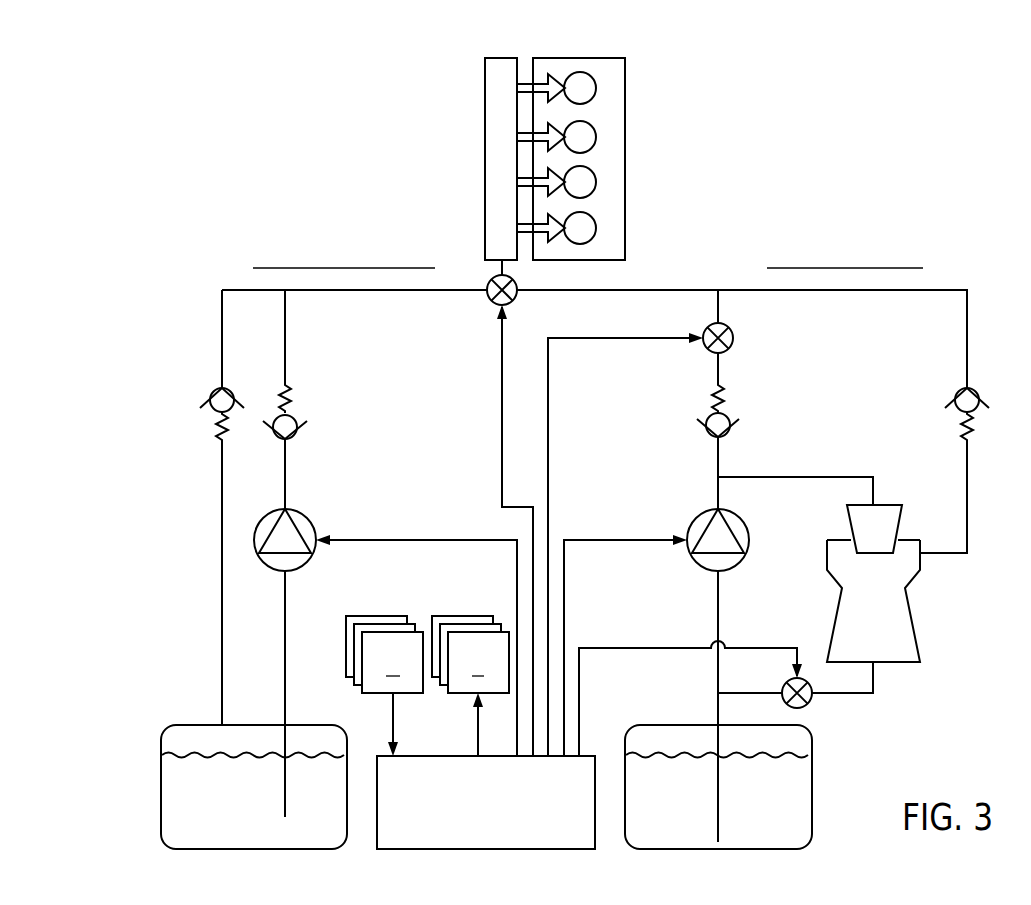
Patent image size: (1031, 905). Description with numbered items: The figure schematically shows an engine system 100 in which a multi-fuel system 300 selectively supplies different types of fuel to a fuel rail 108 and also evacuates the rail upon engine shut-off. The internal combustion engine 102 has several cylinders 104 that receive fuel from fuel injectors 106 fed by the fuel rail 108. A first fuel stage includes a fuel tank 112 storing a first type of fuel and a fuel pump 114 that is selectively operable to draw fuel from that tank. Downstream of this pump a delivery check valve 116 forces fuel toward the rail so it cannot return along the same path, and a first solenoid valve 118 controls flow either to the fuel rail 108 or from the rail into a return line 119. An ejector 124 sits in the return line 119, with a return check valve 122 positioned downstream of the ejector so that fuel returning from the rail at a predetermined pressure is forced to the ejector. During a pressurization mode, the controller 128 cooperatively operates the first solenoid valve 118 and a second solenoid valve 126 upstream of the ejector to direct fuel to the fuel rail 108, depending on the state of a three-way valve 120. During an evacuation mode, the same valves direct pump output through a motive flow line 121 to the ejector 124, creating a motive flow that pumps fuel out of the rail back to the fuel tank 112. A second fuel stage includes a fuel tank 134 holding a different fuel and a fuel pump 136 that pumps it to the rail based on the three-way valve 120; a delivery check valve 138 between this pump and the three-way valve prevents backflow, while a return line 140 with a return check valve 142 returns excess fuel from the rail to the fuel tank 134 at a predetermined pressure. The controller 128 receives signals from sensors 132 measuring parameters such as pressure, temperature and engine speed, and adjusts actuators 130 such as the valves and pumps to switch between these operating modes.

The engine system 100 is at (928, 100).
The fuel system 300 is at (897, 225).
The internal combustion engine 102 is at (625, 153).
The cylinders 104 is at (584, 242).
The fuel injectors 106 is at (567, 214).
The fuel rail 108 is at (485, 108).
The fuel tank 112 is at (656, 725).
The fuel pump 114 is at (748, 521).
The delivery check valve 116 is at (731, 417).
The first solenoid valve 118 is at (734, 331).
The return line 119 is at (940, 290).
The three-way valve 120 is at (516, 283).
The motive flow line 121 is at (812, 477).
The return check valve 122 is at (980, 392).
The ejector 124 is at (912, 611).
The second solenoid valve 126 is at (806, 706).
The controller 128 is at (560, 811).
The actuators 130 is at (362, 617).
The sensors 132 is at (458, 617).
The fuel tank 134 is at (192, 725).
The fuel pump 136 is at (307, 514).
The delivery check valve 138 is at (296, 417).
The return line 140 is at (222, 289).
The return check valve 142 is at (210, 391).